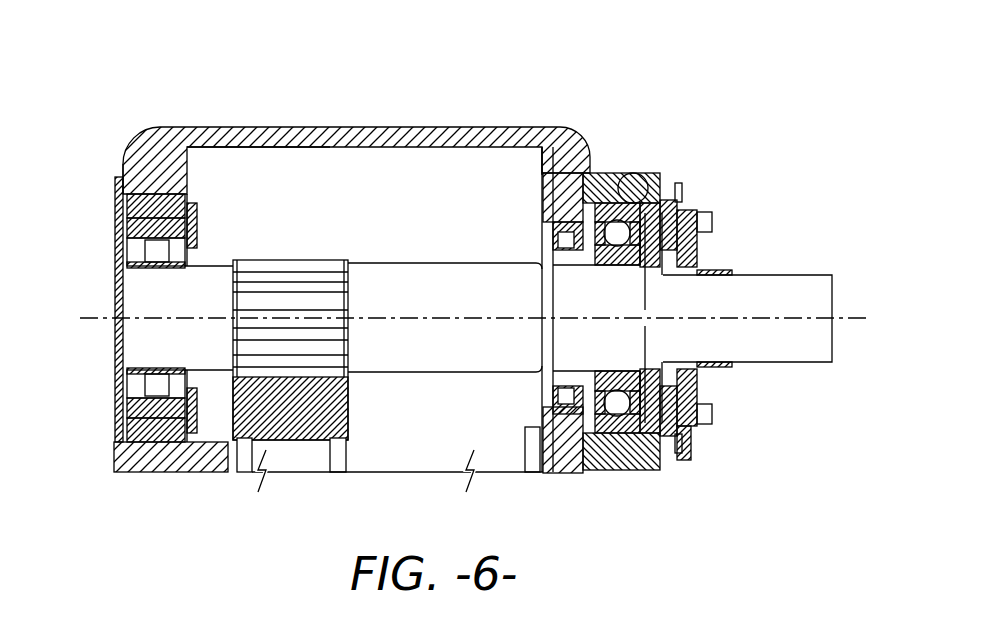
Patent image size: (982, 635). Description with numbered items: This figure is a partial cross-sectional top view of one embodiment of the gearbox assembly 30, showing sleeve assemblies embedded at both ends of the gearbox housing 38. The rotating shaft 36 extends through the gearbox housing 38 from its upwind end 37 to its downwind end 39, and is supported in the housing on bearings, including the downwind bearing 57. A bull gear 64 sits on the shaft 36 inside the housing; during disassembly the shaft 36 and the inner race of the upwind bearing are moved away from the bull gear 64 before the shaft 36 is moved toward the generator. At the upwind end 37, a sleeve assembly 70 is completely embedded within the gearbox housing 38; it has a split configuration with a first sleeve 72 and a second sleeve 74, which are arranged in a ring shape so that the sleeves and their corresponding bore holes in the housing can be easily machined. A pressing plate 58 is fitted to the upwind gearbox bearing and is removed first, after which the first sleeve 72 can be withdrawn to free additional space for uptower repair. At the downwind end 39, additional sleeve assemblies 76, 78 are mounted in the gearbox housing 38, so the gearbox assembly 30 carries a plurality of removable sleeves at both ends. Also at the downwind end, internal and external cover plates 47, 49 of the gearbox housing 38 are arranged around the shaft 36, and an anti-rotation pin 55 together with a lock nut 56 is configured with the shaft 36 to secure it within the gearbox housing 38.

The gearbox assembly 30 is at (172, 70).
The rotating shaft 36 is at (423, 262).
The upwind end 37 is at (243, 127).
The gearbox housing 38 is at (338, 122).
The downwind end 39 is at (541, 162).
The internal cover plate 47 is at (680, 206).
The external cover plate 49 is at (700, 207).
The anti-rotation pin 55 is at (648, 200).
The lock nut 56 is at (708, 222).
The downwind bearing 57 is at (622, 178).
The pressing plate 58 is at (200, 214).
The bull gear 64 is at (337, 415).
The sleeve assembly 70 is at (122, 200).
The first sleeve 72 is at (121, 235).
The second sleeve 74 is at (153, 447).
The additional sleeve assembly 76 is at (538, 189).
The additional sleeve assembly 78 is at (612, 170).